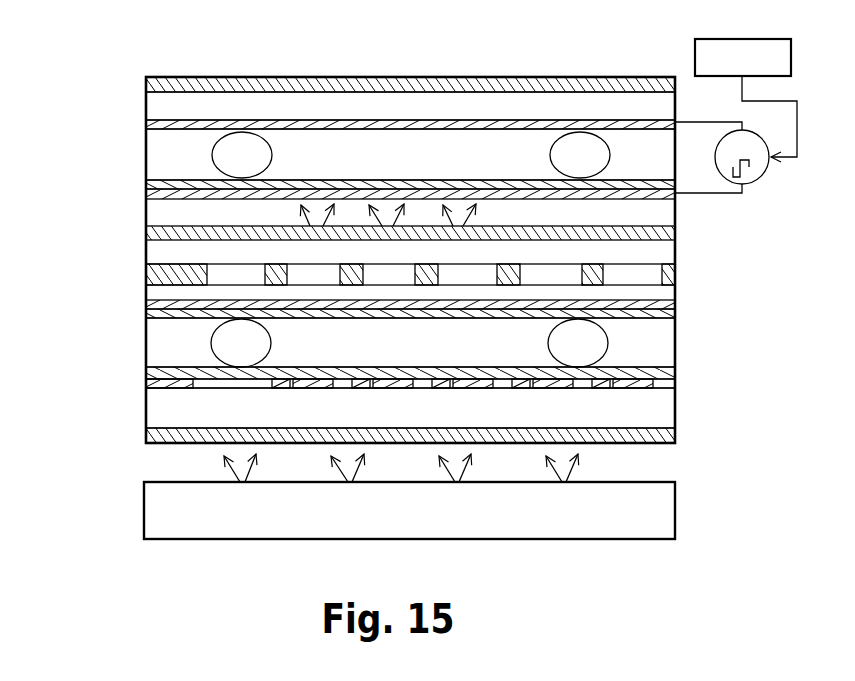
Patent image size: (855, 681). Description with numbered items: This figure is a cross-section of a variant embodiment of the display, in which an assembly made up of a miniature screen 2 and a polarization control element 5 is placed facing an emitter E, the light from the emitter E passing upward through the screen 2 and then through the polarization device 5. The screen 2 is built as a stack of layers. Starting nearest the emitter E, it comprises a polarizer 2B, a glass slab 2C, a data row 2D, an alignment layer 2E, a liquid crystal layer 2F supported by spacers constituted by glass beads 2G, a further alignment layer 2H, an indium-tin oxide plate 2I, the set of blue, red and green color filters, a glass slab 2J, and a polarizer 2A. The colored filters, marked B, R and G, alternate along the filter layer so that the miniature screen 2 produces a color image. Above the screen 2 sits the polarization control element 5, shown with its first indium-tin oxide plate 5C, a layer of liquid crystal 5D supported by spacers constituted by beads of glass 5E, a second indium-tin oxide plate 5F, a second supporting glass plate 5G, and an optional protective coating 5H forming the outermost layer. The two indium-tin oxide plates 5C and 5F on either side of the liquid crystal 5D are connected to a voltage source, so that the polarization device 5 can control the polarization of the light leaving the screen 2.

The polarization control element 5 is at (146, 77).
The protective coating 5H is at (204, 83).
The second supporting glass plate 5G is at (253, 107).
The second indium-tin oxide plate 5F is at (318, 127).
The layer of liquid crystal 5D is at (398, 153).
The beads of glass 5E is at (411, 155).
The first indium-tin oxide plate 5C is at (477, 185).
The miniature screen 2 is at (680, 226).
The polarizer 2A is at (147, 237).
The glass slab 2J is at (155, 255).
The indium-tin oxide plate 2I is at (152, 303).
The alignment layer 2H is at (152, 317).
The liquid crystal layer 2F is at (410, 342).
The glass beads 2G is at (409, 343).
The alignment layer 2E is at (157, 378).
The data row 2D is at (150, 382).
The glass slab 2C is at (167, 410).
The polarizer 2B is at (150, 441).
The emitter E is at (657, 511).